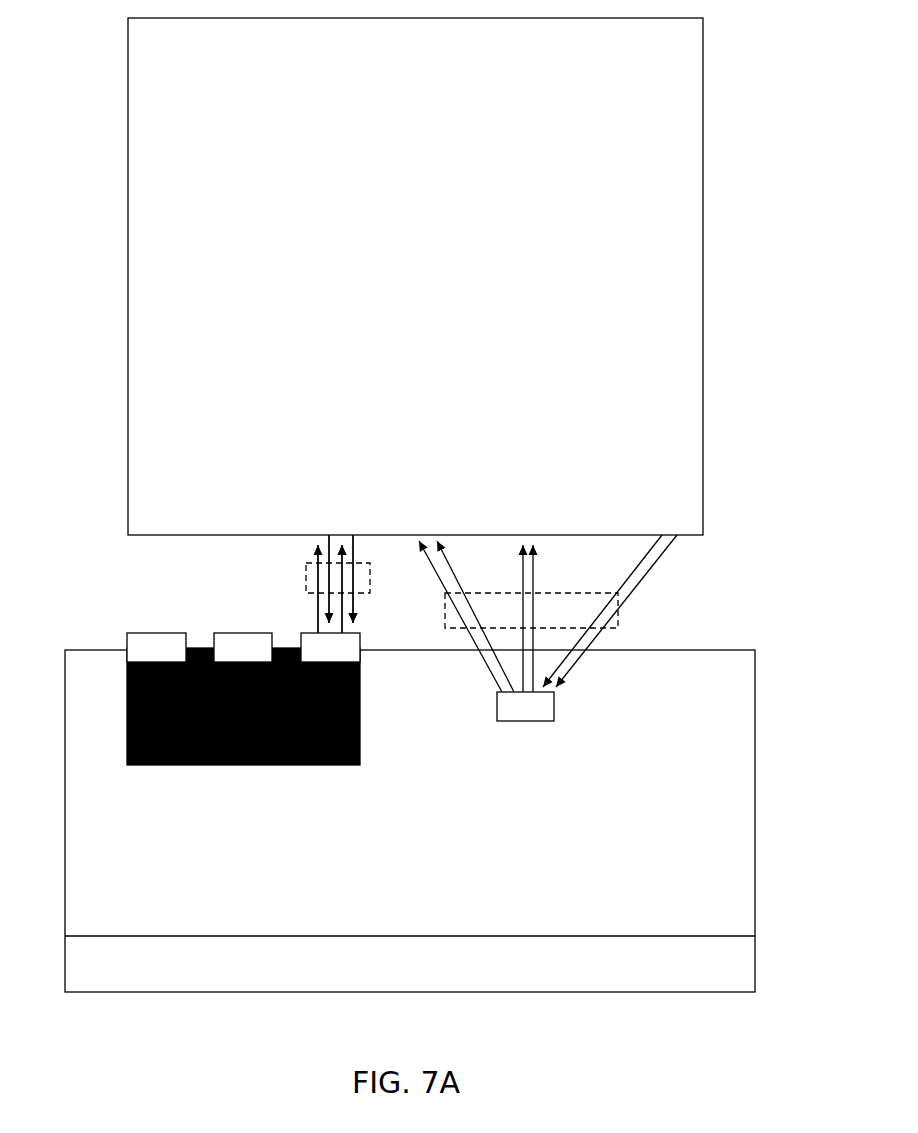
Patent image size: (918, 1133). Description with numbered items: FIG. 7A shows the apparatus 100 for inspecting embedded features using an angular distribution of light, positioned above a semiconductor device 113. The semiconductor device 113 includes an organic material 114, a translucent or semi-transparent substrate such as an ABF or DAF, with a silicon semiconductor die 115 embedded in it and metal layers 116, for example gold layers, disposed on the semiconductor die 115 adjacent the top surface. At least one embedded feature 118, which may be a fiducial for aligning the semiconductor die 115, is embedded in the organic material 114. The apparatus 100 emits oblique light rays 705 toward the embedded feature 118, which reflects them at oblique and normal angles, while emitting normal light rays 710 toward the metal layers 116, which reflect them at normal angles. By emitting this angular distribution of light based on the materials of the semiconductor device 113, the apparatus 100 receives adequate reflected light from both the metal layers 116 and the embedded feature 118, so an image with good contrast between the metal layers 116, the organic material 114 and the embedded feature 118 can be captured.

The apparatus 100 is at (128, 78).
The semiconductor device 113 is at (744, 568).
The organic material 114 is at (102, 650).
The semiconductor die 115 is at (243, 765).
The metal layers 116 is at (305, 633).
The embedded feature 118 is at (525, 721).
The oblique light rays 705 is at (617, 605).
The normal light rays 710 is at (306, 578).